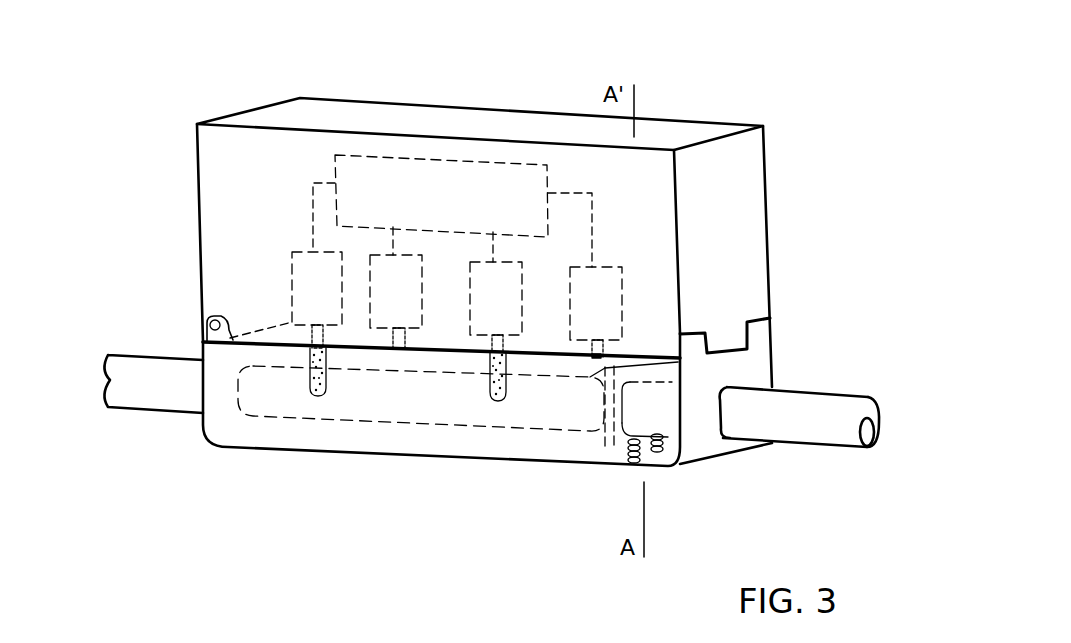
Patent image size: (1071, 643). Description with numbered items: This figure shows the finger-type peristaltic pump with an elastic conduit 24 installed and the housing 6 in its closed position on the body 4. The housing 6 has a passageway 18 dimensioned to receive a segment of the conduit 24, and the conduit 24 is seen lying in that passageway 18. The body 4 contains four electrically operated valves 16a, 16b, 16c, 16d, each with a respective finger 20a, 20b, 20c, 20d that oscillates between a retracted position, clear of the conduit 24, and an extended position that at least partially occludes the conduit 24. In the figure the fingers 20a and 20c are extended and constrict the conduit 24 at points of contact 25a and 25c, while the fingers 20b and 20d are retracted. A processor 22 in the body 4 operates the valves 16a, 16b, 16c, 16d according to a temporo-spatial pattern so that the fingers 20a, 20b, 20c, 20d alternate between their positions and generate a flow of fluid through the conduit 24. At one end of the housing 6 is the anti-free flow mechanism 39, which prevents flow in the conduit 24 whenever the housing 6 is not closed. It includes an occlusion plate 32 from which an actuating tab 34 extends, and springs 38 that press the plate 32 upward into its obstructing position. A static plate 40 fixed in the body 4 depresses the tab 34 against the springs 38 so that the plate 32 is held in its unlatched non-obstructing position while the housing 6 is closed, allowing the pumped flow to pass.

The body 4 is at (198, 205).
The housing 6 is at (203, 350).
The valve 16a is at (339, 304).
The valve 16b is at (418, 307).
The valve 16c is at (518, 313).
The valve 16d is at (618, 318).
The passageway 18 is at (403, 395).
The finger 20a is at (307, 357).
The finger 20b is at (397, 349).
The finger 20c is at (490, 373).
The finger 20d is at (593, 357).
The processor 22 is at (459, 226).
The conduit 24 is at (827, 413).
The point of contact 25a is at (318, 370).
The point of contact 25c is at (497, 402).
The occlusion plate 32 is at (607, 438).
The actuating tab 34 is at (617, 357).
The springs 38 is at (663, 457).
The anti-free flow mechanism 39 is at (680, 370).
The static plate 40 is at (653, 353).